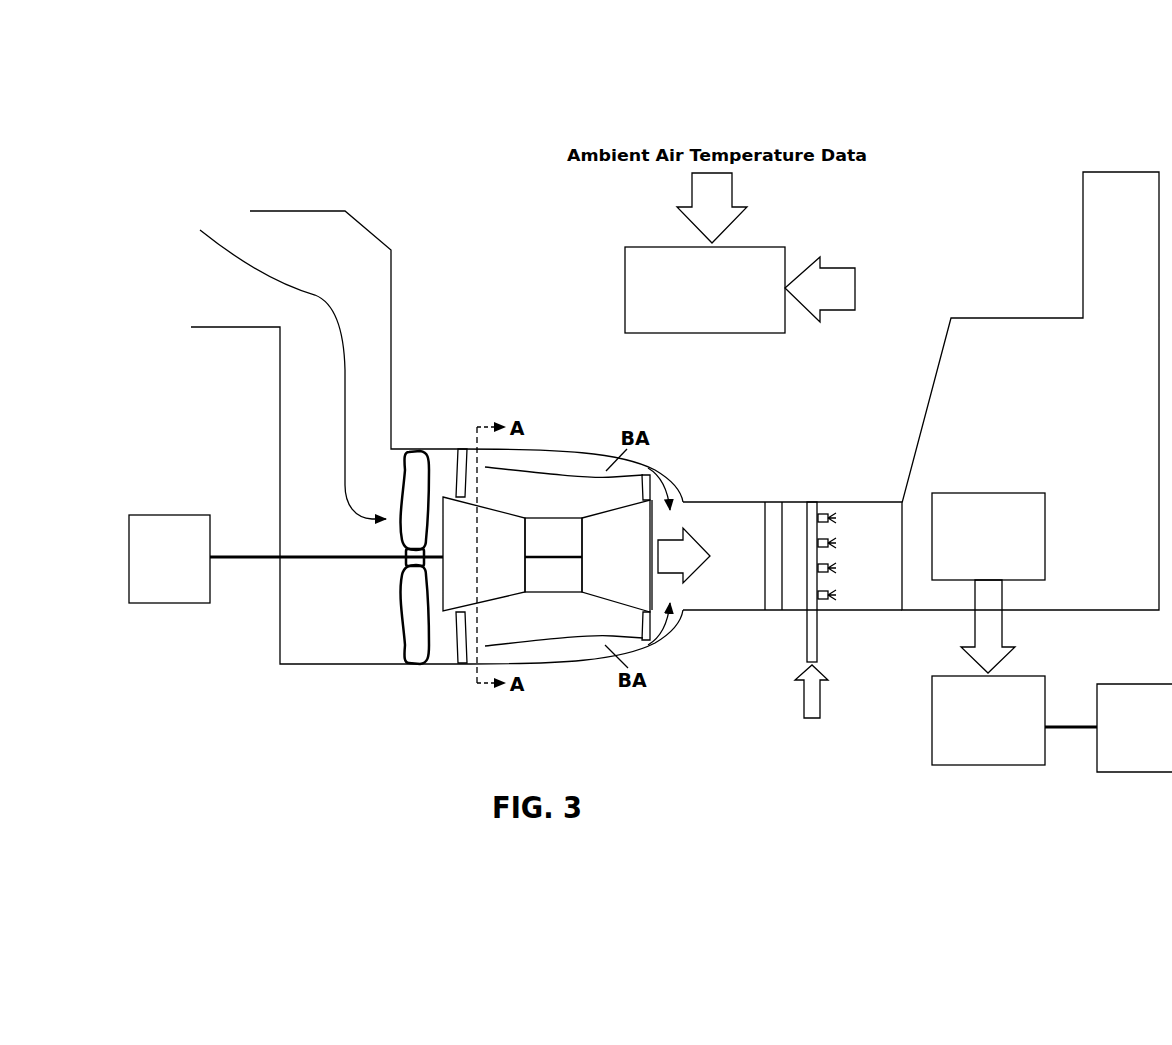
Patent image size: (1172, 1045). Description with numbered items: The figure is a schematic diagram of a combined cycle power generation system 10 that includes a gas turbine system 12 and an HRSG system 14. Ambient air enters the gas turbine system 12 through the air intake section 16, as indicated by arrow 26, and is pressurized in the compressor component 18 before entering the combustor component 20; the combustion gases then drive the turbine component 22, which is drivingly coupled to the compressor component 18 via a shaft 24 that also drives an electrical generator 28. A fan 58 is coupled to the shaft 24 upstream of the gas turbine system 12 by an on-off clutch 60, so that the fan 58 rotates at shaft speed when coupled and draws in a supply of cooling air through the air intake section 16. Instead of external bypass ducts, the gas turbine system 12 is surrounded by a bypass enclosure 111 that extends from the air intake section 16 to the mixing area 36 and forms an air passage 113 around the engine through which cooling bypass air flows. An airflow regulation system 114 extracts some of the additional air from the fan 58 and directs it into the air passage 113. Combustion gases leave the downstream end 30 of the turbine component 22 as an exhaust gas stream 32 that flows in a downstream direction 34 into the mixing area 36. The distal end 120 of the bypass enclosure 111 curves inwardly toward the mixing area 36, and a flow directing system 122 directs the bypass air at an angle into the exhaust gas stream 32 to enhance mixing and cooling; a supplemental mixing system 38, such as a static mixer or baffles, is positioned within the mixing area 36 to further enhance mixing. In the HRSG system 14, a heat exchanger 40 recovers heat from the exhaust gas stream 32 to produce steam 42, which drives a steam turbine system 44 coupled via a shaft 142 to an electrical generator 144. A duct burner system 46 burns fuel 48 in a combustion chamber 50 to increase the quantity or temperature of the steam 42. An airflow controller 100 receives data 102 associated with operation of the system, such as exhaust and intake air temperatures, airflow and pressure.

The combined cycle power generation system 10 is at (546, 193).
The gas turbine system 12 is at (547, 609).
The HRSG system 14 is at (1030, 391).
The air intake section 16 is at (276, 386).
The compressor component 18 is at (484, 554).
The combustor component 20 is at (553, 555).
The turbine component 22 is at (616, 556).
The shaft 24 is at (328, 560).
The arrow 26 is at (318, 296).
The electrical generator 28 is at (180, 605).
The downstream end 30 is at (650, 573).
The exhaust gas stream 32 is at (684, 555).
The downstream direction 34 is at (755, 595).
The mixing area 36 is at (792, 521).
The supplemental mixing system 38 is at (772, 502).
The heat exchanger 40 is at (988, 536).
The steam 42 is at (1007, 618).
The steam turbine system 44 is at (988, 720).
The duct burner system 46 is at (849, 515).
The fuel 48 is at (825, 701).
The combustion chamber 50 is at (868, 560).
The fan 58 is at (405, 605).
The on-off clutch 60 is at (405, 562).
The airflow controller 100 is at (705, 290).
The data 102 is at (840, 266).
The bypass enclosure 111 is at (551, 451).
The air passage 113 is at (567, 556).
The airflow regulation system 114 is at (457, 470).
The distal end 120 is at (680, 490).
The flow directing system 122 is at (662, 478).
The shaft 142 is at (1082, 732).
The electrical generator 144 is at (1140, 773).